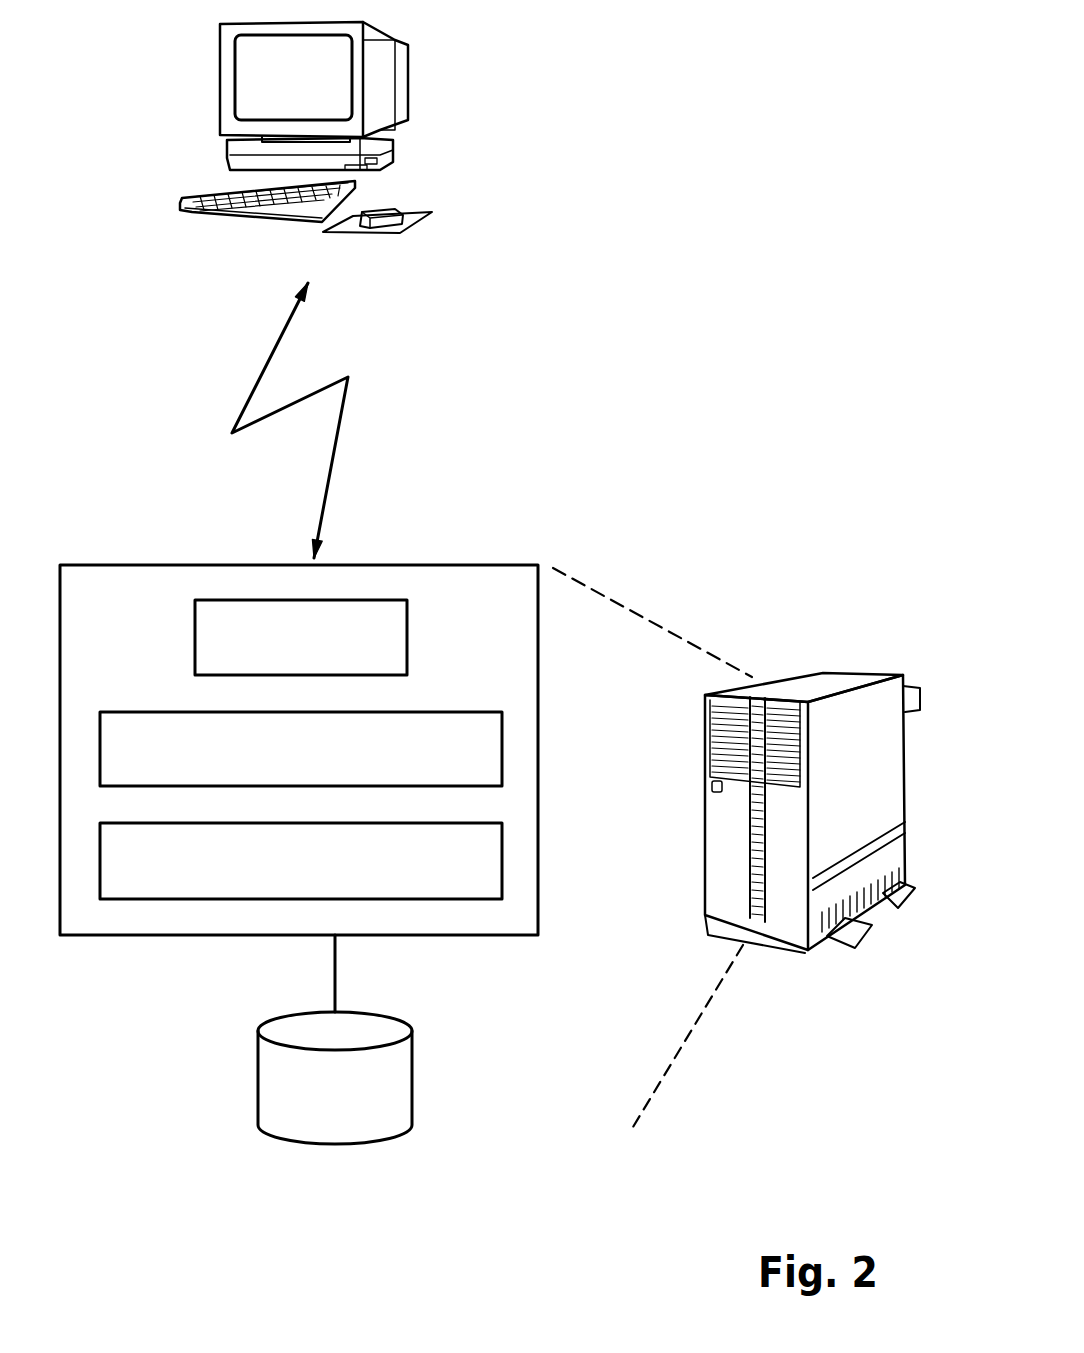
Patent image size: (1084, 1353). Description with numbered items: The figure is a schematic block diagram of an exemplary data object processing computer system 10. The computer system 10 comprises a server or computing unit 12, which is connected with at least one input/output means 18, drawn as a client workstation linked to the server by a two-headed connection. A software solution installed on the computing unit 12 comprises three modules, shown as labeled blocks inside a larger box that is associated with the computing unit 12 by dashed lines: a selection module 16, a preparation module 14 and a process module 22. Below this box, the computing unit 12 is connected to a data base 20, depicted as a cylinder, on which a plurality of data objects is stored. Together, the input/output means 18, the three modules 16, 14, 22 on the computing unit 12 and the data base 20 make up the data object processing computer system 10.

The data object processing computer system 10 is at (501, 694).
The computing unit 12 is at (810, 677).
The preparation module 14 is at (502, 748).
The selection module 16 is at (389, 598).
The input/output means 18 is at (380, 126).
The data base 20 is at (412, 1080).
The process module 22 is at (502, 865).